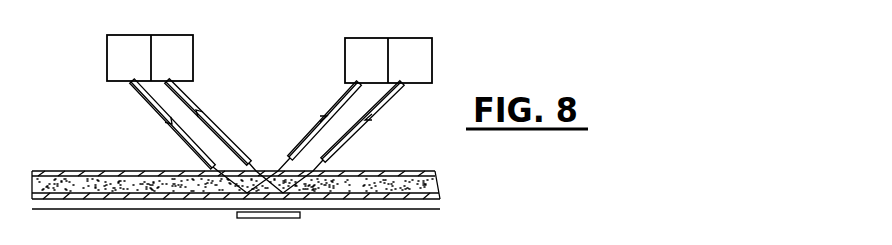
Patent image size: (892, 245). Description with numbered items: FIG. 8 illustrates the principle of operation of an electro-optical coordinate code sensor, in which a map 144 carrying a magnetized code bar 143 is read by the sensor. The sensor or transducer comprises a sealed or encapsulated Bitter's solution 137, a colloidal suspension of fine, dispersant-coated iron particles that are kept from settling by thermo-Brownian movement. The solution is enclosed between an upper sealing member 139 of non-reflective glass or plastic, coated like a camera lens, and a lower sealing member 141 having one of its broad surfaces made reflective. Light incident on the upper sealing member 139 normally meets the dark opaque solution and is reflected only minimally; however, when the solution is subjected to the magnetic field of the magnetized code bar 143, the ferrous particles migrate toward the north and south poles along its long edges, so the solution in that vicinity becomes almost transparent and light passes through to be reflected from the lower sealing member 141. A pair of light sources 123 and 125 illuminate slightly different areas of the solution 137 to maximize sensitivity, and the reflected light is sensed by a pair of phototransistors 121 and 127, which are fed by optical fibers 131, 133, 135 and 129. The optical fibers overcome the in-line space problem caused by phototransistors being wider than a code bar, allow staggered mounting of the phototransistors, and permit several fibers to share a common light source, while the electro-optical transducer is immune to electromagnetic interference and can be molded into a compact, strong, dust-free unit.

The phototransistor 121 is at (369, 38).
The light source 123 is at (417, 38).
The light source 125 is at (136, 35).
The phototransistor 127 is at (175, 35).
The optical fiber 129 is at (383, 105).
The optical fiber 131 is at (314, 126).
The optical fiber 133 is at (216, 126).
The optical fiber 135 is at (157, 112).
The sealed Bitter's solution 137 is at (445, 181).
The upper sealing member 139 is at (388, 172).
The lower sealing member 141 is at (440, 200).
The magnetized code bar 143 is at (257, 221).
The map 144 is at (76, 211).